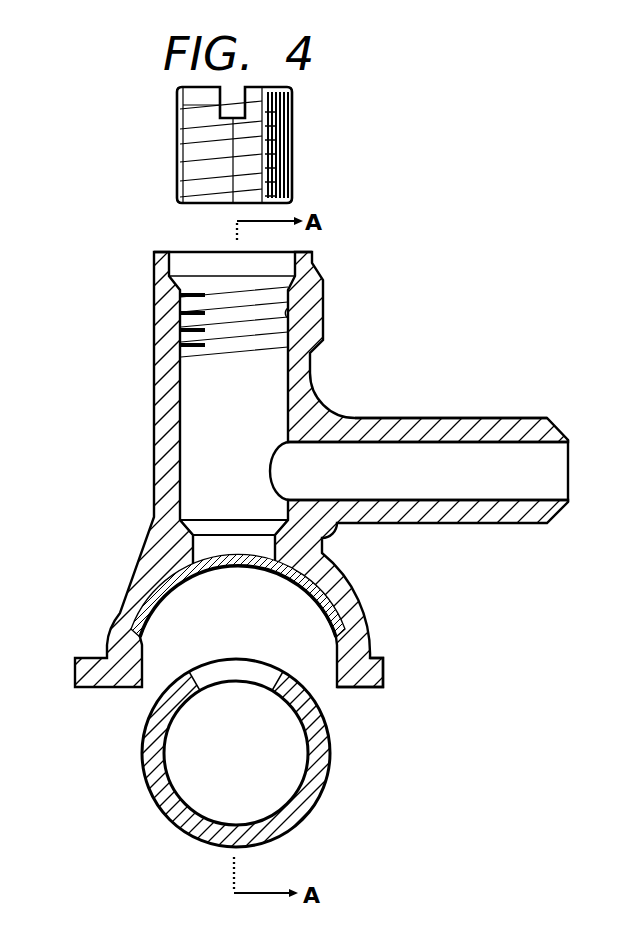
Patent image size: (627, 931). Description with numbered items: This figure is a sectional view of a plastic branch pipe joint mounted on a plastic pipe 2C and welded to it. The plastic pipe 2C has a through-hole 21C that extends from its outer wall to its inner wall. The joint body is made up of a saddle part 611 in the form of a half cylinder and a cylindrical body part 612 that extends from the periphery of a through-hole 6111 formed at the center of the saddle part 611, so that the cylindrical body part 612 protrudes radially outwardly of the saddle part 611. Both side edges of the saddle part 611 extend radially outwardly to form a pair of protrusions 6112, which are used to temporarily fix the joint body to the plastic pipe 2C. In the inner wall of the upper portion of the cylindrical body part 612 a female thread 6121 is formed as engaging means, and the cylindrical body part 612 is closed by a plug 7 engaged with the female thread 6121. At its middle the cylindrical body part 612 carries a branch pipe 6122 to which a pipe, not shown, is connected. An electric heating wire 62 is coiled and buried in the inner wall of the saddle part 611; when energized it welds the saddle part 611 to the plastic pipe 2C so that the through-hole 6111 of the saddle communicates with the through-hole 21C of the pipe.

The plug 7 is at (293, 131).
The female thread 6121 is at (300, 296).
The cylindrical body part 612 is at (322, 347).
The branch pipe 6122 is at (482, 432).
The through-hole 6111 is at (205, 544).
The electric heating wire 62 is at (185, 578).
The through-hole 21C is at (237, 673).
The saddle part 611 is at (350, 607).
The protrusions 6112 is at (385, 677).
The plastic pipe 2C is at (328, 772).